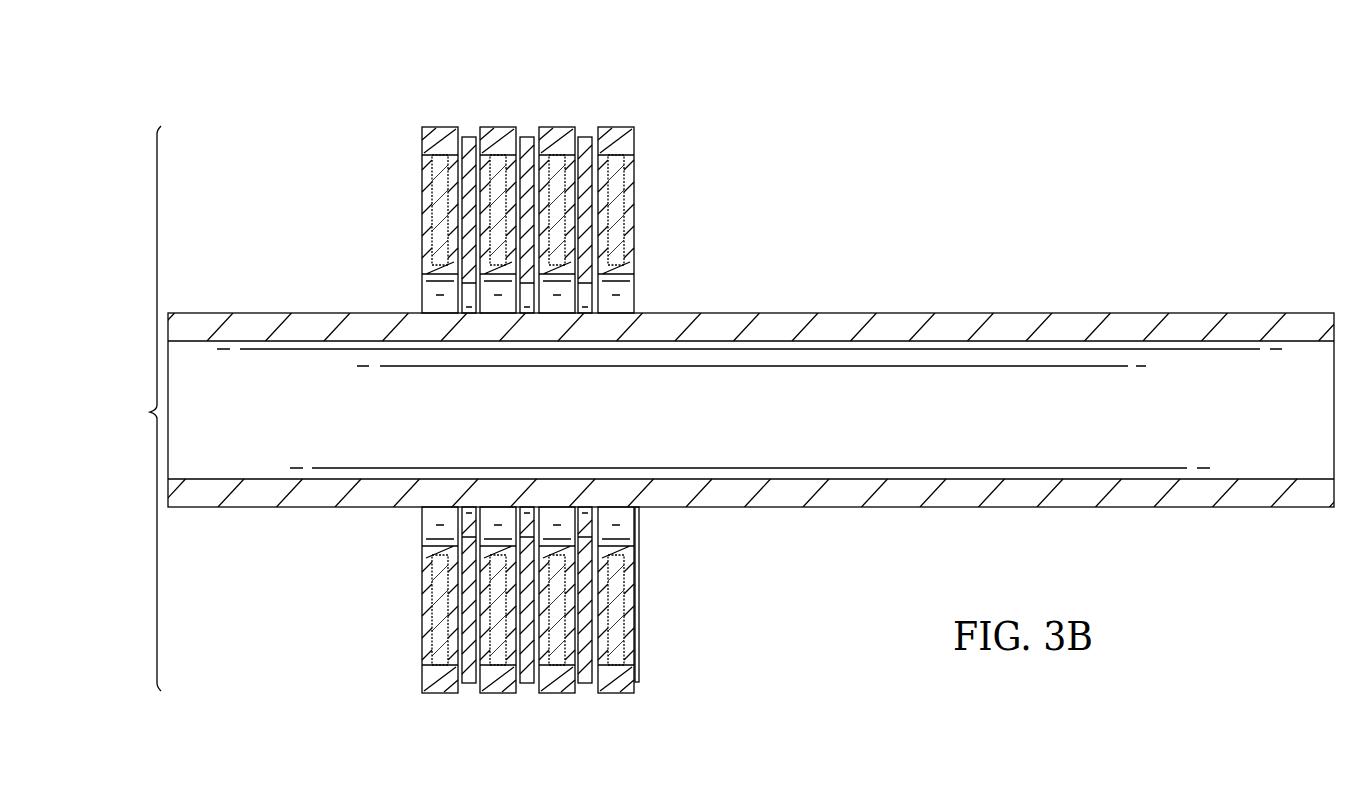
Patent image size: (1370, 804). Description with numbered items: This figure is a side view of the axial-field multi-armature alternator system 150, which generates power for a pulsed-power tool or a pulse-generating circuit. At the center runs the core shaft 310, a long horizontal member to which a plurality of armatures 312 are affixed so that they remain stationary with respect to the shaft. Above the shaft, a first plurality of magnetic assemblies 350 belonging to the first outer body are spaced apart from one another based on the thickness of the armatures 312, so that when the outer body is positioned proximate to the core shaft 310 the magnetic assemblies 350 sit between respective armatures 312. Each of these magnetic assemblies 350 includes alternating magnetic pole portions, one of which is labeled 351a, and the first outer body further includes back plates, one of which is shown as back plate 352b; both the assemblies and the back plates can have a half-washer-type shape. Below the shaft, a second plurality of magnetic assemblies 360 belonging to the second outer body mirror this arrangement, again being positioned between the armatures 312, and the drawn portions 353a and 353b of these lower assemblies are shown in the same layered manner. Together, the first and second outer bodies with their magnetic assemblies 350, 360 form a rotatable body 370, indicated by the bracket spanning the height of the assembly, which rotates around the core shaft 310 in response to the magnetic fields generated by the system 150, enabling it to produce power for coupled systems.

The axial-field multi-armature alternator system 150 is at (986, 119).
The core shaft 310 is at (1142, 313).
The armatures 312 is at (585, 682).
The first plurality of magnetic assemblies 350 is at (483, 173).
The alternating magnetic pole portion 351a is at (428, 180).
The back plate 352b is at (453, 227).
The outer electrode layer 353a is at (428, 638).
The inner thermoelectric layer 353b is at (452, 583).
The second plurality of magnetic assemblies 360 is at (483, 648).
The rotatable body 370 is at (131, 408).